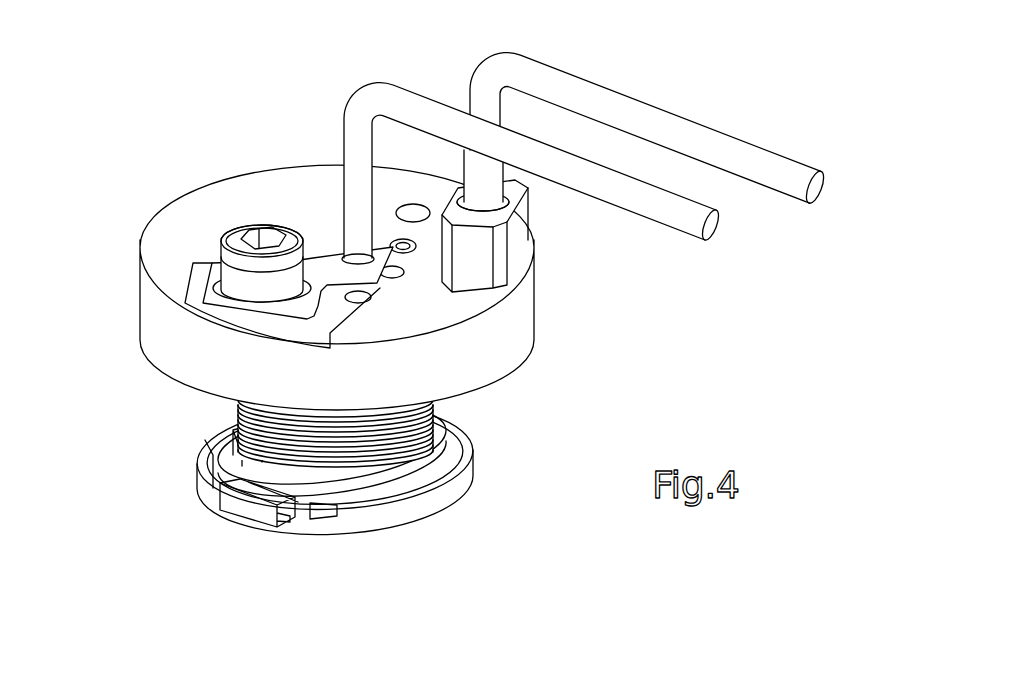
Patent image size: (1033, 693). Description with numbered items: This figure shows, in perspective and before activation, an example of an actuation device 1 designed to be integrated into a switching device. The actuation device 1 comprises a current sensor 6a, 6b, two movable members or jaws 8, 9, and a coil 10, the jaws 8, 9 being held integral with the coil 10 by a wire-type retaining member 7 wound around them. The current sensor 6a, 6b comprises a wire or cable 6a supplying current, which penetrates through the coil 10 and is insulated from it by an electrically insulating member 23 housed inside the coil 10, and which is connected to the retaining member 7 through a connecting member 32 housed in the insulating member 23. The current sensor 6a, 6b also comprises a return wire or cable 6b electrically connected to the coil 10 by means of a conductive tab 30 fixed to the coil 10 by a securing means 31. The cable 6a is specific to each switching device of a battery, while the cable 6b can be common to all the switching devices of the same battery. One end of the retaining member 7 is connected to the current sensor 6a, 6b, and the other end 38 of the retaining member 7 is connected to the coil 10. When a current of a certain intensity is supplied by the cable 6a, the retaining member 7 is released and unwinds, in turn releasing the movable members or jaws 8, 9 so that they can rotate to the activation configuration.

The actuation device 1 is at (435, 326).
The current-supply wire or cable 6a is at (658, 125).
The return wire or cable 6b is at (661, 215).
The retaining member 7 is at (388, 478).
The movable member or jaw 8 is at (382, 478).
The movable member or jaw 9 is at (203, 417).
The coil 10 is at (157, 318).
The electrically insulating member 23 is at (513, 250).
The conductive tab 30 is at (337, 266).
The securing means 31 is at (222, 243).
The connecting member 32 is at (419, 126).
The end of retaining member 38 is at (300, 553).